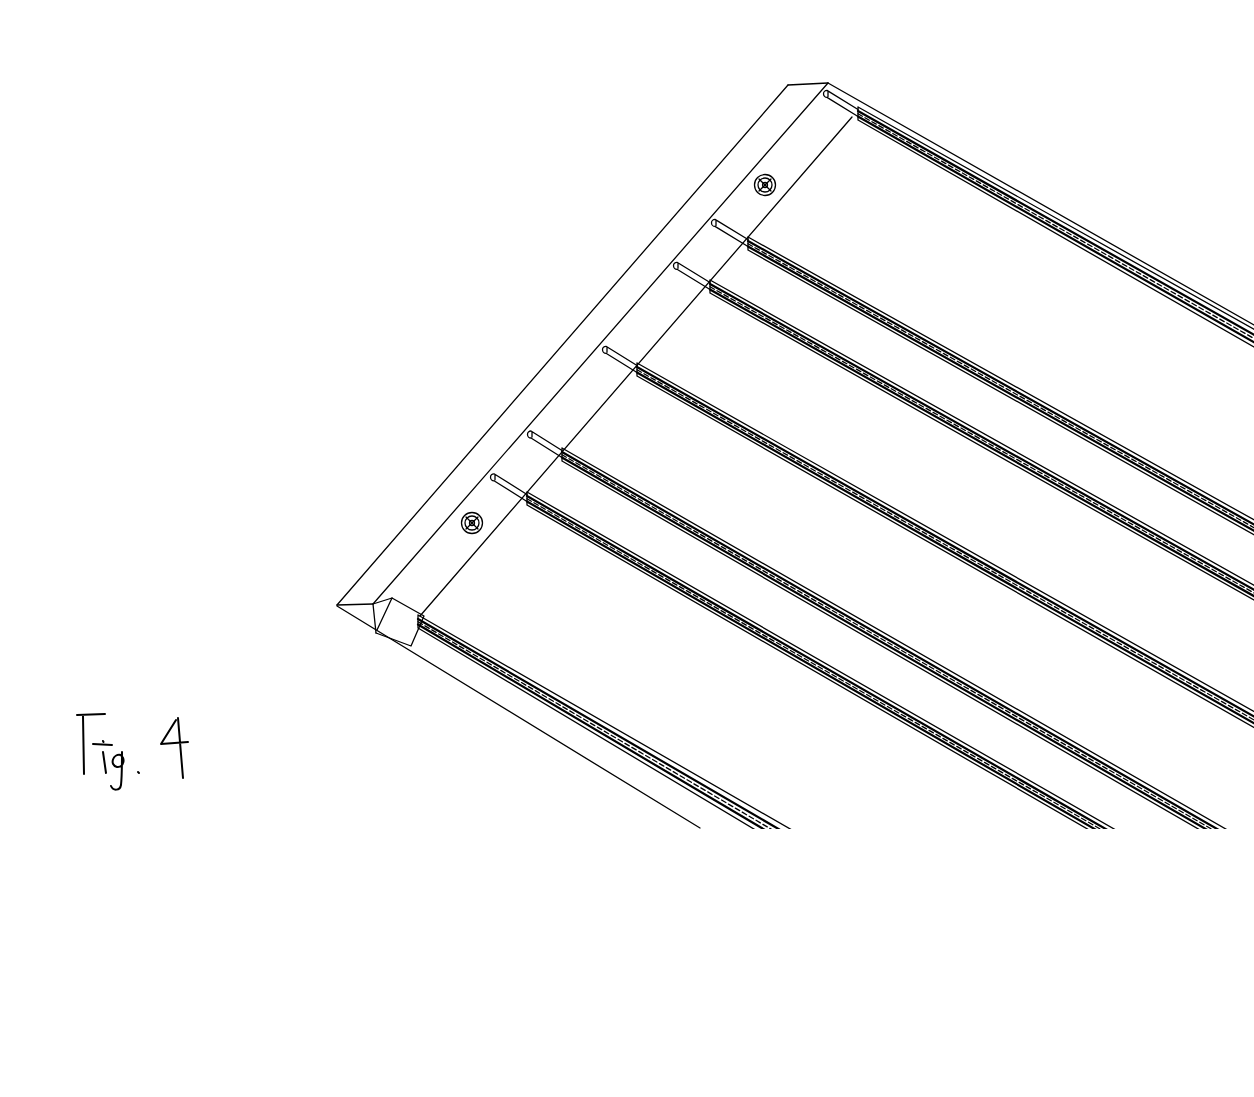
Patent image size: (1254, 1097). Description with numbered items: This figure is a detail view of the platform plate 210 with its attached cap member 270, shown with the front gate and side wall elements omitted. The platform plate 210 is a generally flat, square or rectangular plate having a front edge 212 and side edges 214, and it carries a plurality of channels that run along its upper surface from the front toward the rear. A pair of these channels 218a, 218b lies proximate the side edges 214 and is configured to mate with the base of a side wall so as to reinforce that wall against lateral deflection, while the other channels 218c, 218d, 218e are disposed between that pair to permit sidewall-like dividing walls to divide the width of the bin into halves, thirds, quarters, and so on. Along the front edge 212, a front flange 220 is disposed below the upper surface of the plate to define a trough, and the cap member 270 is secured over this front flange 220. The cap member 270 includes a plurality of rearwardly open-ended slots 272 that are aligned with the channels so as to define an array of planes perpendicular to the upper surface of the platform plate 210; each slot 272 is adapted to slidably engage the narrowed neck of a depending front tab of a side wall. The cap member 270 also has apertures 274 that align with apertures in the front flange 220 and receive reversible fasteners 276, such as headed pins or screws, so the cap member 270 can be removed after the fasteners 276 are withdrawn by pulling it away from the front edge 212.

The platform plate 210 is at (1065, 303).
The front edge 212 is at (420, 640).
The side edge 214 is at (1190, 297).
The channel 218a is at (959, 166).
The channel 218b is at (600, 740).
The channel 218c is at (657, 388).
The channel 218d is at (563, 467).
The channel 218e is at (540, 515).
The front flange 220 is at (382, 635).
The cap member 270 is at (638, 280).
The rearwardly open-ended slot 272 is at (838, 80).
The aperture 274 is at (750, 187).
The reversible fastener 276 is at (773, 182).